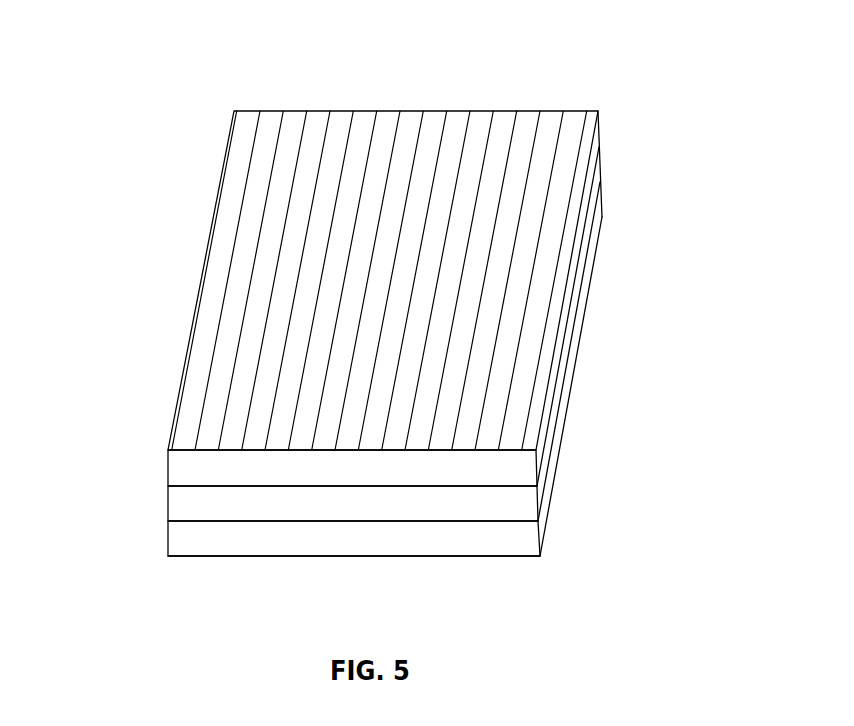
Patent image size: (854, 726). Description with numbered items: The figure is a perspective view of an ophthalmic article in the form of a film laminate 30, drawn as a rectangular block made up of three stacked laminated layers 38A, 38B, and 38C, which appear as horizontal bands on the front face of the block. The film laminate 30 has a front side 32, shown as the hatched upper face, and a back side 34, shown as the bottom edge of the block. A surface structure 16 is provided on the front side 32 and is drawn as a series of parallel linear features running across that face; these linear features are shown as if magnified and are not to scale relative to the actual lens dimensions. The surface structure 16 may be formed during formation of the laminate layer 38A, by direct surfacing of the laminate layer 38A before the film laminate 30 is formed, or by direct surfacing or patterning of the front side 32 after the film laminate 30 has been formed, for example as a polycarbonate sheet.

The film laminate 30 is at (389, 332).
The surface structure 16 is at (394, 140).
The front side 32 is at (383, 240).
The back side 34 is at (288, 565).
The laminate layer 38A is at (167, 470).
The laminate layer 38B is at (167, 508).
The laminate layer 38C is at (167, 540).